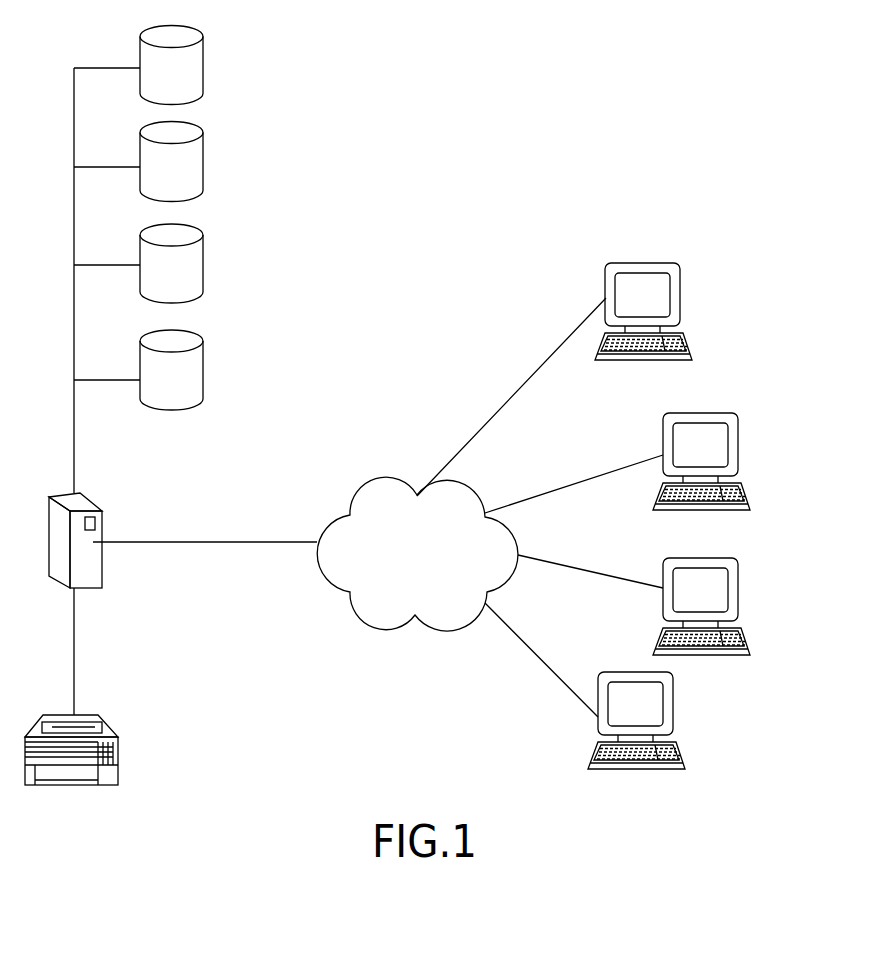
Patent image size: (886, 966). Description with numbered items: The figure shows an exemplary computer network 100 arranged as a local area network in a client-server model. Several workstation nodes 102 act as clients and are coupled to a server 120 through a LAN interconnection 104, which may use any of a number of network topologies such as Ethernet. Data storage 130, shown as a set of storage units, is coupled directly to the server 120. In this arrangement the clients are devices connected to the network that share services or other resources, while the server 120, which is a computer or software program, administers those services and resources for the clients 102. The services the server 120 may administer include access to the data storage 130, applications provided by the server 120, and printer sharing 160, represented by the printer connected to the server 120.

The computer network 100 is at (514, 134).
The workstation nodes 102 is at (697, 493).
The LAN interconnection 104 is at (433, 578).
The server 120 is at (87, 577).
The data storage 130 is at (190, 81).
The printer sharing 160 is at (112, 785).